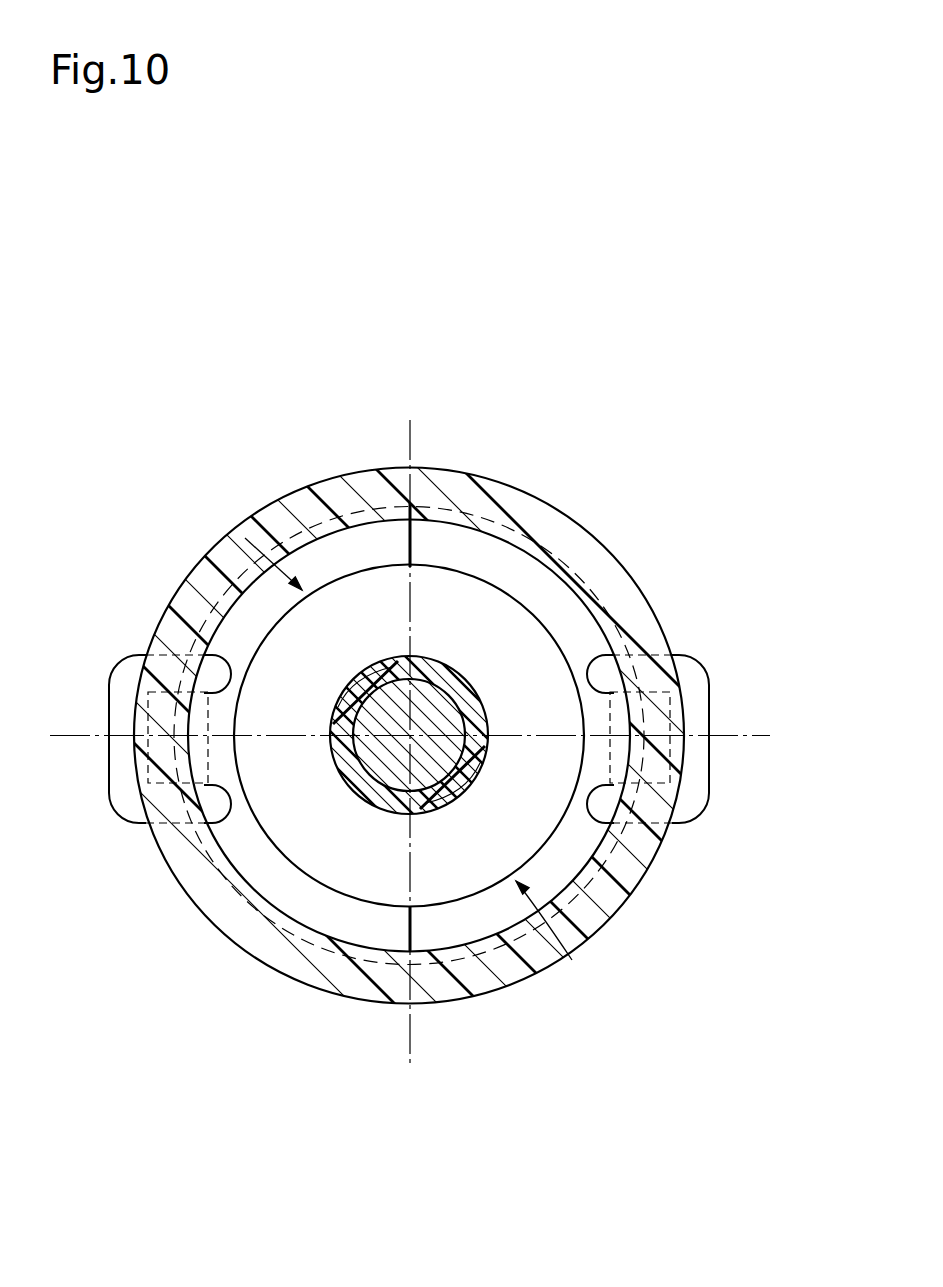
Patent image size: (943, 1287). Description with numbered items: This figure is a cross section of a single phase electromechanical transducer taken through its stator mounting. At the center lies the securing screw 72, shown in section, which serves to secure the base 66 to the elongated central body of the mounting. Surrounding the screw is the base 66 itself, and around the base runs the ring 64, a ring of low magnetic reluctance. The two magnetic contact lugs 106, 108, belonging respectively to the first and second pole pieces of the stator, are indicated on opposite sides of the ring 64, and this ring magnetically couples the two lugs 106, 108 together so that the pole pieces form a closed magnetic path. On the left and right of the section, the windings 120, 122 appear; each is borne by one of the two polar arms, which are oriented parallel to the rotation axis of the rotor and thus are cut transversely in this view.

The ring 64 is at (532, 667).
The base 66 is at (570, 550).
The securing screw 72 is at (388, 755).
The magnetic contact lug 106 is at (245, 538).
The magnetic contact lug 108 is at (572, 960).
The winding 120 is at (124, 785).
The winding 122 is at (712, 692).